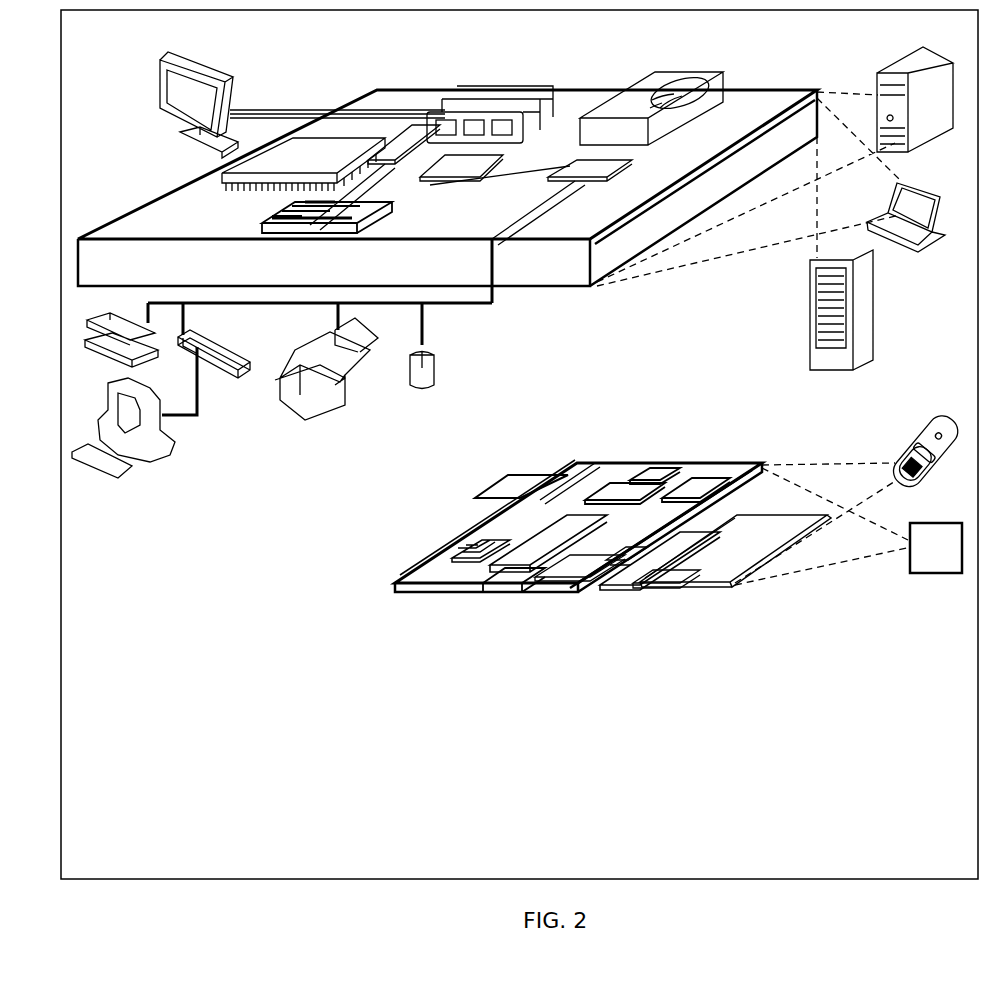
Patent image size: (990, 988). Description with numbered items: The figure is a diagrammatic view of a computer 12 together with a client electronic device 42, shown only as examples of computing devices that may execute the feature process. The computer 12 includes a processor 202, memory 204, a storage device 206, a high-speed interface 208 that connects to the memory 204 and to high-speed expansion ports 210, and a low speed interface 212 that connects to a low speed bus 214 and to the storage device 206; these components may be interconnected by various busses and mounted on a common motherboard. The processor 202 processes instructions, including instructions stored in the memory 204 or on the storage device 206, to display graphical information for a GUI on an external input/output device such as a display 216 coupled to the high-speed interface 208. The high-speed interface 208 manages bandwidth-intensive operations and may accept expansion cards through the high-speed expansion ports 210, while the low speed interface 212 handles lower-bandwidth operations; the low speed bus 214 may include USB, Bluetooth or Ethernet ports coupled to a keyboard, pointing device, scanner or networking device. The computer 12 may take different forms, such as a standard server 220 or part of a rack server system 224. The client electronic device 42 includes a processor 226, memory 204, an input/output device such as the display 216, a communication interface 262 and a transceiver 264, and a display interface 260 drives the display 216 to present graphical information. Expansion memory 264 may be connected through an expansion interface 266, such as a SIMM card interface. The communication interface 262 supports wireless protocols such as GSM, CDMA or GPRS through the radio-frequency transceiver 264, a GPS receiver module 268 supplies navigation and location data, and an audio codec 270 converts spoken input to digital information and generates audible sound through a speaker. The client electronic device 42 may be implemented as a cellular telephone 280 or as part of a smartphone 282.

The computer 12 is at (313, 66).
The client electronic device 42 is at (556, 450).
The processor 202 is at (210, 178).
The memory 204 is at (467, 86).
The storage device 206 is at (646, 86).
The high-speed interface 208 is at (414, 144).
The high-speed expansion ports 210 is at (267, 215).
The low speed interface 212 is at (578, 176).
The low speed bus 214 is at (495, 243).
The display 216 is at (168, 60).
The standard server 220 is at (873, 76).
The rack server system 224 is at (811, 332).
The processor 226 is at (527, 584).
The display interface 260 is at (638, 582).
The communication interface 262 is at (586, 488).
The transceiver 264 is at (506, 483).
The expansion interface 266 is at (556, 482).
The GPS receiver module 268 is at (646, 476).
The audio codec 270 is at (662, 572).
The cellular telephone 280 is at (922, 429).
The smartphone 282 is at (919, 526).